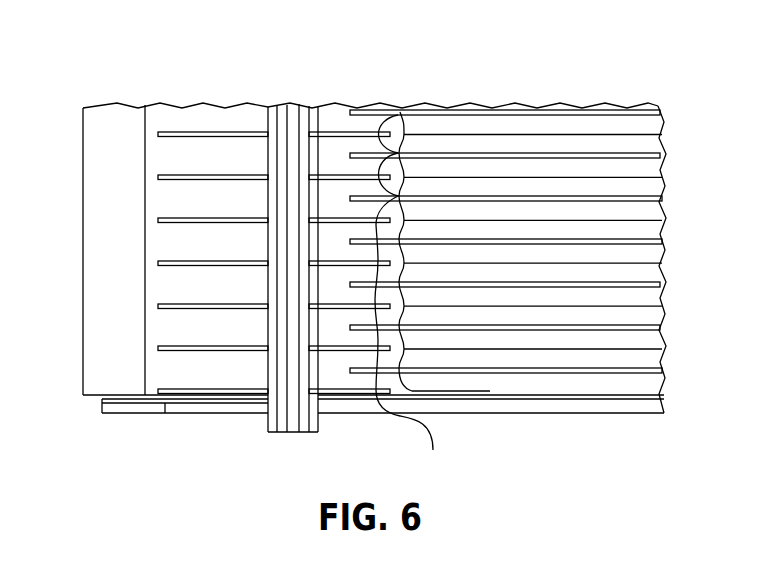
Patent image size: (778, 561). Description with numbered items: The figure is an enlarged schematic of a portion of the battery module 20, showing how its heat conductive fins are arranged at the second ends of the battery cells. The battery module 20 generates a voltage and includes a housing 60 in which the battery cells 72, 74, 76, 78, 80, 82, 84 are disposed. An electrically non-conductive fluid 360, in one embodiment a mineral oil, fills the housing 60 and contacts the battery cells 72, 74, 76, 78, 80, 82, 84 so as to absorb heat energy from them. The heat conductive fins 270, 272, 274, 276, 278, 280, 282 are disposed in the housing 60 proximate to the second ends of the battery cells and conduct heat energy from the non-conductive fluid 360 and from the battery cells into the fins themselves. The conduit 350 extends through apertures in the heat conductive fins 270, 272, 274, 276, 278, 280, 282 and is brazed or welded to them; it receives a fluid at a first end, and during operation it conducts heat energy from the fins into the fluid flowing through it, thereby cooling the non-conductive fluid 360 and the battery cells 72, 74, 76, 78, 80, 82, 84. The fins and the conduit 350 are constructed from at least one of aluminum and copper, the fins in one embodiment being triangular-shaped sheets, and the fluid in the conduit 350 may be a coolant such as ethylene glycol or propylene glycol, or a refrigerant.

The battery module 20 is at (561, 84).
The housing 60 is at (73, 374).
The battery cell 72 is at (410, 352).
The battery cell 74 is at (400, 363).
The battery cell 76 is at (396, 330).
The battery cell 78 is at (401, 286).
The battery cell 80 is at (400, 154).
The battery cell 82 is at (399, 111).
The battery cell 84 is at (370, 110).
The heat conductive fin 270 is at (196, 396).
The heat conductive fin 272 is at (178, 351).
The heat conductive fin 274 is at (178, 309).
The heat conductive fin 276 is at (178, 266).
The heat conductive fin 278 is at (178, 223).
The heat conductive fin 280 is at (178, 180).
The heat conductive fin 282 is at (178, 137).
The conduit 350 is at (282, 433).
The non-conductive fluid 360 is at (354, 374).